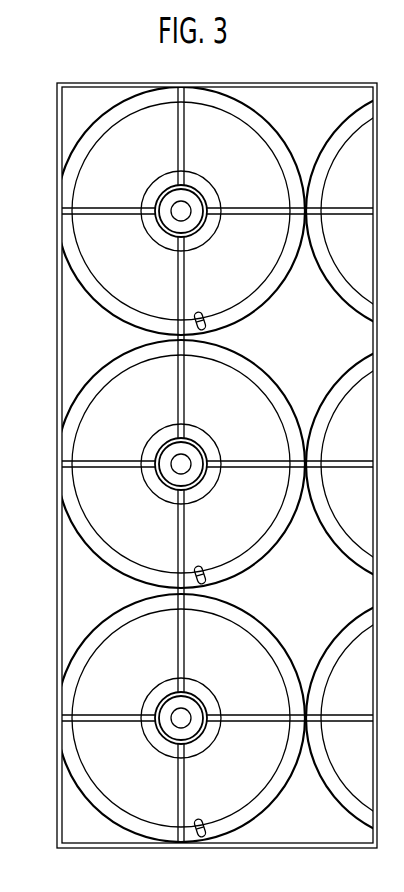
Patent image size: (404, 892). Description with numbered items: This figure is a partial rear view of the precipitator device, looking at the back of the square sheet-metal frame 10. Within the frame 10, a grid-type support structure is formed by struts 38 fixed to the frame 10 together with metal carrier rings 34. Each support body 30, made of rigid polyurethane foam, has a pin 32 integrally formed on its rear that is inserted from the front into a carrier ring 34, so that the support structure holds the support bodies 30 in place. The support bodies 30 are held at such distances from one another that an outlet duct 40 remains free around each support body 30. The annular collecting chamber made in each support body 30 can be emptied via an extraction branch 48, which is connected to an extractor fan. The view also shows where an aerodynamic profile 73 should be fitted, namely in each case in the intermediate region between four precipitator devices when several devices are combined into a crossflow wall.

The frame 10 is at (57, 115).
The support body 30 is at (119, 193).
The pin 32 is at (163, 216).
The carrier ring 34 is at (157, 232).
The strut 38 is at (178, 328).
The outlet duct 40 is at (75, 362).
The extraction branch 48 is at (207, 322).
The aerodynamic profile 73 is at (331, 357).